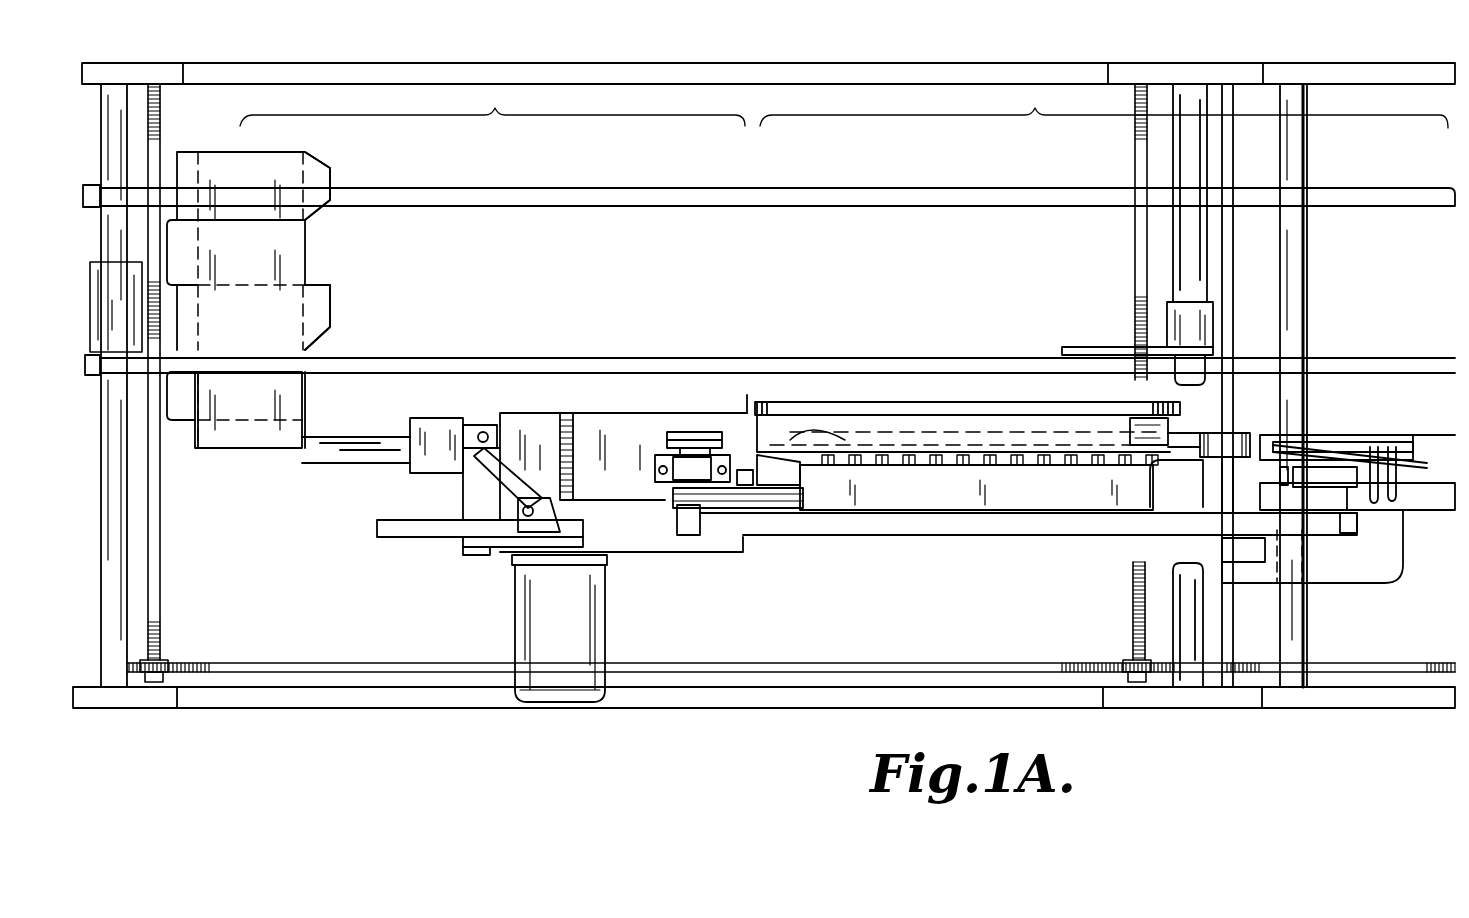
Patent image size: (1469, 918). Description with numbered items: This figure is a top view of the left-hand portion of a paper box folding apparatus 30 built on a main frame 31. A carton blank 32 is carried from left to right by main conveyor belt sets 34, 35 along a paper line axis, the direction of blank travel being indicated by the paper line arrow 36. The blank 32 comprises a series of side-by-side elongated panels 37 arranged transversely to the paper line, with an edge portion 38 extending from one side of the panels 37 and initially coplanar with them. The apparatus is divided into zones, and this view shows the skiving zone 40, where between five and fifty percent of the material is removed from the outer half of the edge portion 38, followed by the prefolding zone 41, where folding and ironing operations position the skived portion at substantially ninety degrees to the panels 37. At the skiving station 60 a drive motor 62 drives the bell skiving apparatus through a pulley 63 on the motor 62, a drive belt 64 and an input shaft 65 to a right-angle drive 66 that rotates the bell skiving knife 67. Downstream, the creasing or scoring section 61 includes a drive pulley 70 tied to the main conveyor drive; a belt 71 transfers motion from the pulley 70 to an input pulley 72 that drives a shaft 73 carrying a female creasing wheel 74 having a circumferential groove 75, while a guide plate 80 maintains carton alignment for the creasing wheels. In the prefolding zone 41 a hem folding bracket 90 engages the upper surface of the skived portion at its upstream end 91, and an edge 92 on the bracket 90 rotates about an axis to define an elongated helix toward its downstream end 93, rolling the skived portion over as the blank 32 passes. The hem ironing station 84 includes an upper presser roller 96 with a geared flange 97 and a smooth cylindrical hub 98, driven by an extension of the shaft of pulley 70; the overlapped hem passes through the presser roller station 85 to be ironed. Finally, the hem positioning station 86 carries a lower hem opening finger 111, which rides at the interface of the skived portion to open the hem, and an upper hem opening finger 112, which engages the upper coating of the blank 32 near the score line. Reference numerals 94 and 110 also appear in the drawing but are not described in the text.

The paper box folding apparatus 30 is at (787, 50).
The main frame 31 is at (703, 63).
The carton blank 32 is at (262, 152).
The main conveyor belt set 34 is at (676, 195).
The main conveyor belt set 35 is at (740, 385).
The paper line arrow 36 is at (258, 575).
The elongated panels 37 is at (320, 172).
The edge portion 38 is at (243, 440).
The skiving zone 40 is at (492, 106).
The prefolding zone 41 is at (1104, 107).
The skiving station 60 is at (333, 470).
The creasing or scoring section 61 is at (700, 560).
The drive motor 62 is at (607, 628).
The pulley 63 is at (570, 532).
The drive belt 64 is at (505, 550).
The input shaft 65 is at (470, 553).
The right-angle drive 66 is at (432, 478).
The bell skiving knife 67 is at (297, 460).
The drive pulley 70 is at (1265, 550).
The belt 71 is at (955, 520).
The input pulley 72 is at (720, 513).
The shaft 73 is at (702, 515).
The female creasing wheel 74 is at (682, 437).
The circumferential groove 75 is at (700, 437).
The guide plate 80 is at (620, 430).
The hem ironing station 84 is at (984, 411).
The hem positioning station 85 is at (1162, 300).
The hem positioning station 86 is at (1333, 441).
The bracket 90 is at (1065, 445).
The upstream end 91 is at (757, 400).
The edge 92 is at (888, 440).
The downstream end 93 is at (1140, 355).
The tray 94 is at (838, 420).
The upper presser roller 96 is at (1250, 438).
The geared flange 97 is at (1222, 436).
The smooth cylindrical hub 98 is at (1237, 437).
The end block 110 is at (1420, 510).
The lower hem opening finger 111 is at (1432, 450).
The upper hem opening finger 112 is at (1405, 440).